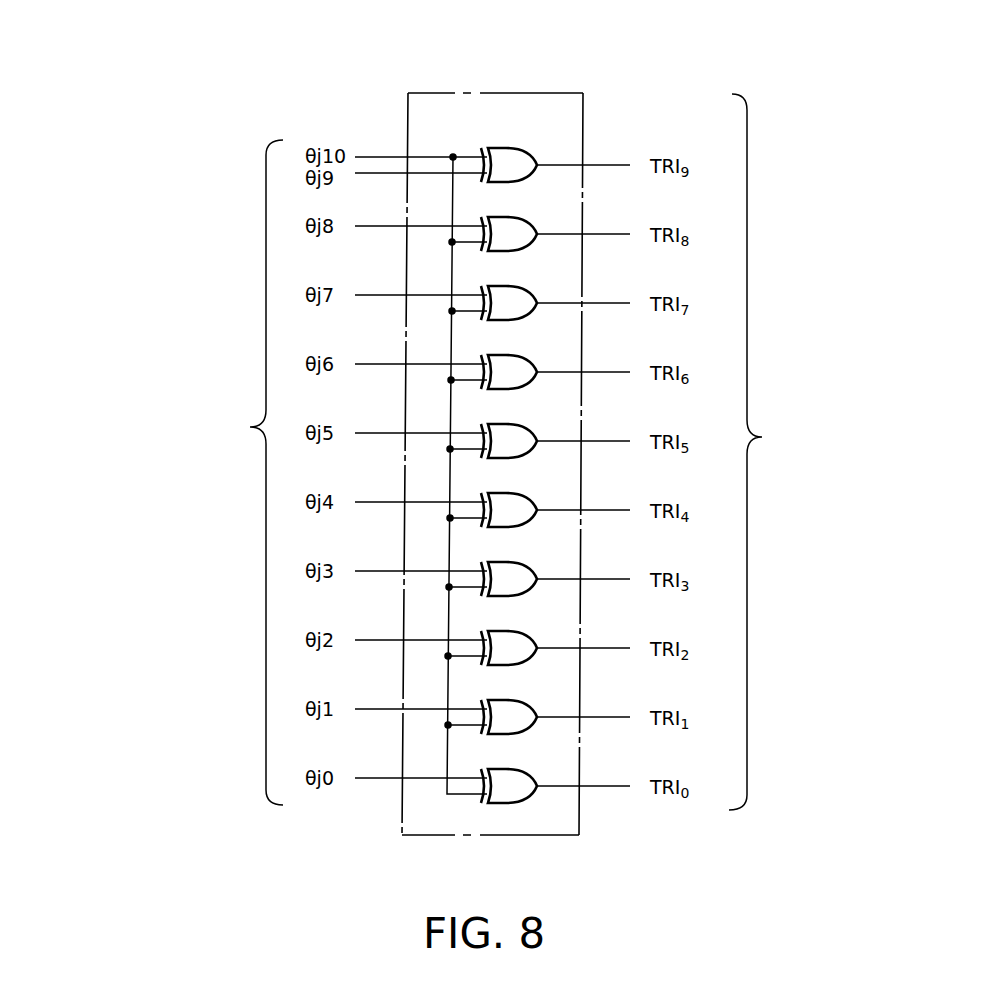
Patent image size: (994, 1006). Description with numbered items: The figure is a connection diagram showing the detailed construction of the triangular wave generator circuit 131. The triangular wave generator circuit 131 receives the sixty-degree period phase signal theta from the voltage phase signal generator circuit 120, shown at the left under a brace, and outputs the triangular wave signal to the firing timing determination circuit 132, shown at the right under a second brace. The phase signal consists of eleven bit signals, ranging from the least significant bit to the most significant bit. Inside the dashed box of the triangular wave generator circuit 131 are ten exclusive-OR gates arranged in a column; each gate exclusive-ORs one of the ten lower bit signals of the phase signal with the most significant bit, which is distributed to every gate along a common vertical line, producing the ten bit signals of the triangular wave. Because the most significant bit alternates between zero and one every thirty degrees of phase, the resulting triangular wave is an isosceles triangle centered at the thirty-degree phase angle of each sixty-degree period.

The triangular wave generator circuit 131 is at (547, 94).
The voltage phase signal generator circuit 120 is at (155, 472).
The firing timing determination circuit 132 is at (812, 452).